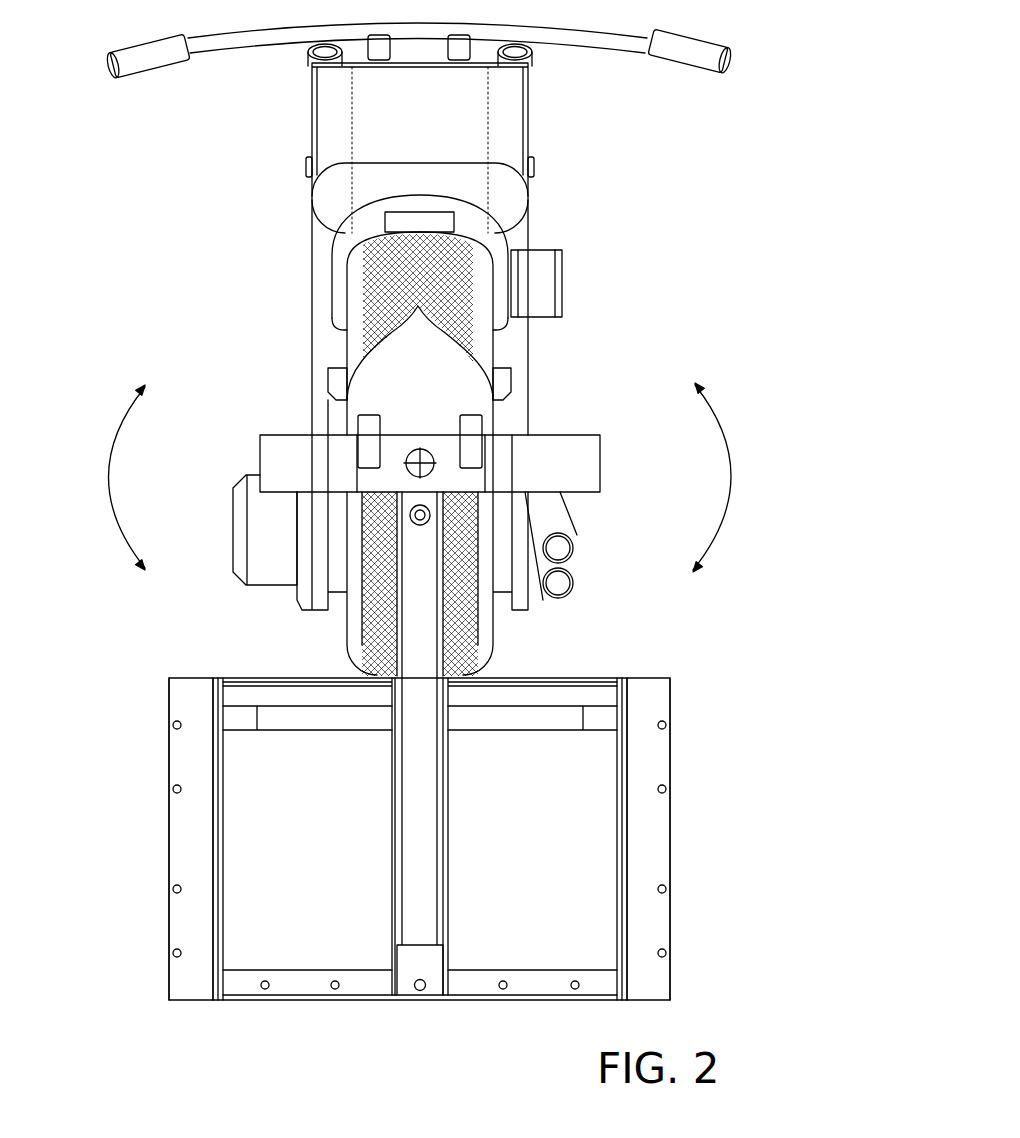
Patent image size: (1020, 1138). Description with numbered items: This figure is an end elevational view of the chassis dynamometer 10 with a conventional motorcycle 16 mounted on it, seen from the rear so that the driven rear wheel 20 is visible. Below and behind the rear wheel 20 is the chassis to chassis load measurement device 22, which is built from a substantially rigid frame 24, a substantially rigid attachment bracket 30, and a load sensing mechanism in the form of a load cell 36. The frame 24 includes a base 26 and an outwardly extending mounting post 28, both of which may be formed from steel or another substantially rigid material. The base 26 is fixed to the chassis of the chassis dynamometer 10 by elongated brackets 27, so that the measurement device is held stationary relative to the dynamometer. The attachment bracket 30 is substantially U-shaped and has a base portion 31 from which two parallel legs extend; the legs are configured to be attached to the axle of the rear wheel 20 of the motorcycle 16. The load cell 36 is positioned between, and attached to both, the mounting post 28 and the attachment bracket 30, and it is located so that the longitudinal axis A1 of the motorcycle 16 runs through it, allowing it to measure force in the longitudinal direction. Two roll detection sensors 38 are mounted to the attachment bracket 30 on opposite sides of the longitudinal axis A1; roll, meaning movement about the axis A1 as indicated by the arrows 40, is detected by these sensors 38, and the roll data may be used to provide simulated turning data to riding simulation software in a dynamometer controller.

The chassis dynamometer 10 is at (117, 640).
The motorcycle 16 is at (255, 150).
The rear wheel 20 is at (487, 272).
The chassis to chassis load measurement device 22 is at (232, 405).
The frame 24 is at (420, 887).
The base 26 is at (300, 952).
The elongated brackets 27 is at (175, 762).
The mounting post 28 is at (418, 621).
The attachment bracket 30 is at (605, 428).
The base portion 31 is at (587, 473).
The load cell 36 is at (432, 478).
The roll detection sensors 38 is at (478, 425).
The arrows 40 is at (738, 473).
The longitudinal axis A1 is at (410, 452).